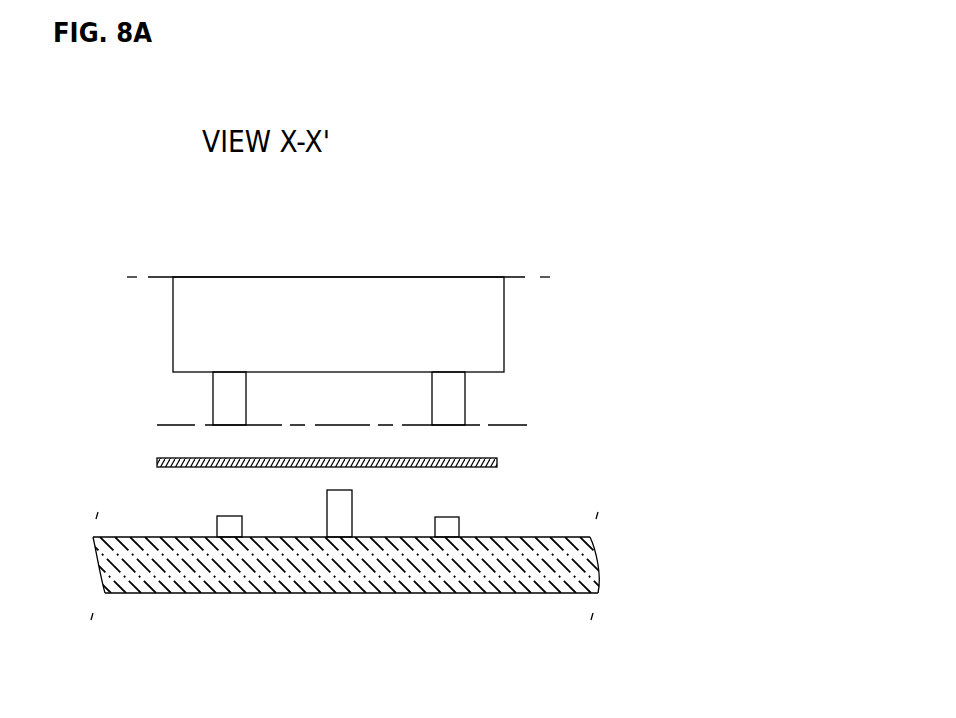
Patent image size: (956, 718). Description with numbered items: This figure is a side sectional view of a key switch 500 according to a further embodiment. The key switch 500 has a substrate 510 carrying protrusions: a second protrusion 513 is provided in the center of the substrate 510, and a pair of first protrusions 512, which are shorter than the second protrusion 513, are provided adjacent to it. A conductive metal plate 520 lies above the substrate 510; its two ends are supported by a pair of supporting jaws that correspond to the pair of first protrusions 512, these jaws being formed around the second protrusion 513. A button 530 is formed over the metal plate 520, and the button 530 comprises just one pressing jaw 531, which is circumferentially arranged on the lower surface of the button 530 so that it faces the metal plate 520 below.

The key switch 500 is at (415, 243).
The substrate 510 is at (583, 565).
The first protrusions 512 is at (440, 530).
The second protrusion 513 is at (338, 508).
The conductive metal plate 520 is at (498, 463).
The button 530 is at (498, 312).
The pressing jaw 531 is at (222, 401).